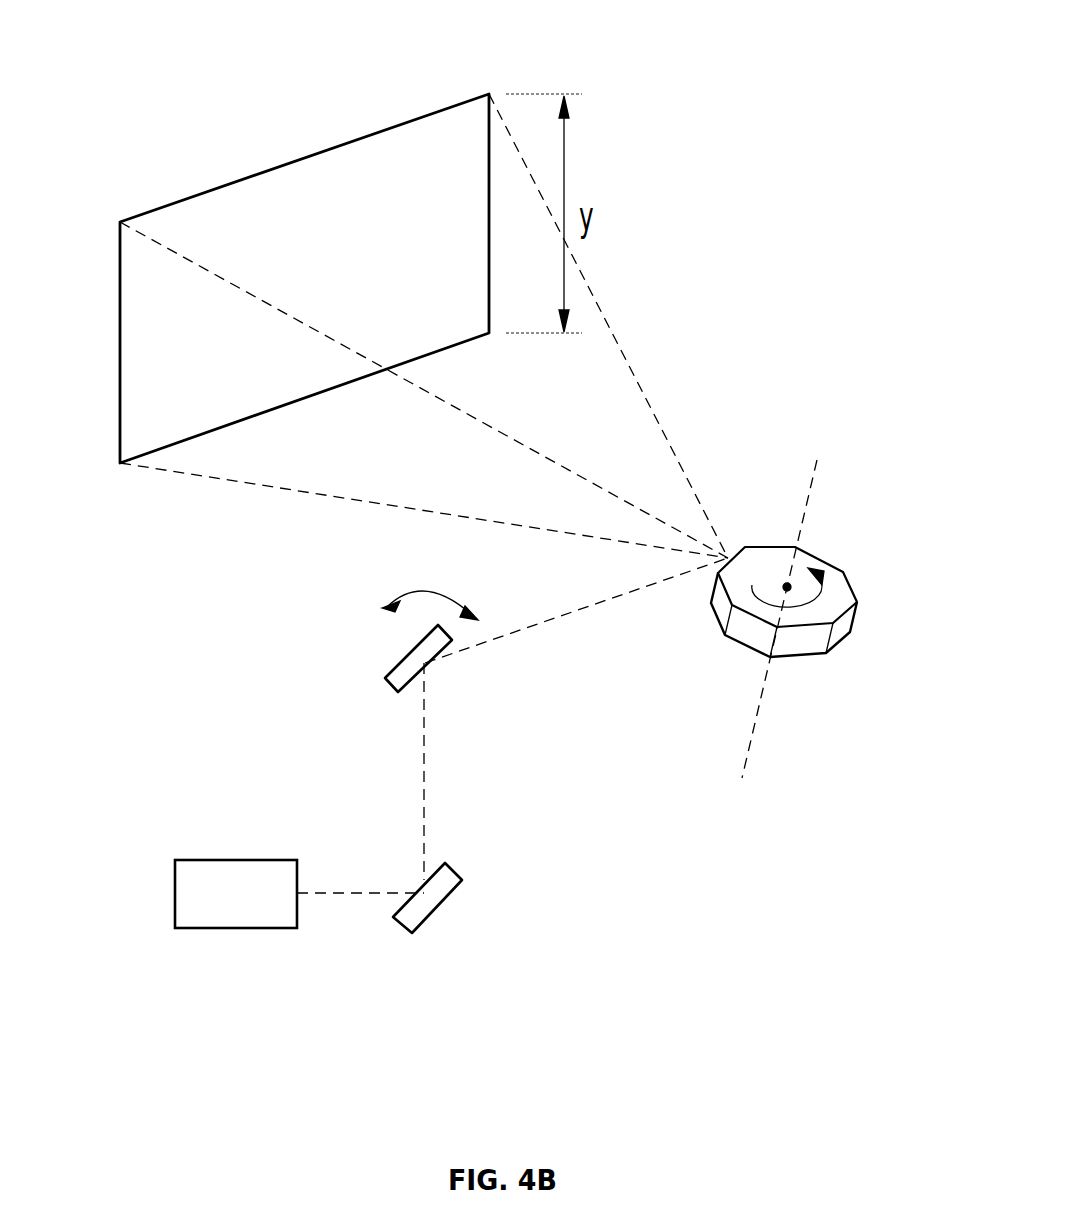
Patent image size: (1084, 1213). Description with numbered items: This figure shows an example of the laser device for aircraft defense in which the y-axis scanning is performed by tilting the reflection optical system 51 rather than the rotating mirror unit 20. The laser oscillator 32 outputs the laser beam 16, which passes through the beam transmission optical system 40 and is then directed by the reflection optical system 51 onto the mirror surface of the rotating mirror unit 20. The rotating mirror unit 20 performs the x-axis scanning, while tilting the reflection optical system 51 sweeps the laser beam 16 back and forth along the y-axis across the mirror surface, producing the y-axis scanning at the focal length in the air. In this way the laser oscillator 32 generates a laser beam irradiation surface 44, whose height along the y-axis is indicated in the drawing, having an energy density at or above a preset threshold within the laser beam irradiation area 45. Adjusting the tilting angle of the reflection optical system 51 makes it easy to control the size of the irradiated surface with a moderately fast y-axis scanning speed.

The laser beam 16 is at (597, 605).
The rotating mirror unit 20 is at (835, 588).
The laser oscillator 32 is at (175, 893).
The beam transmission optical system 40 is at (438, 908).
The laser beam irradiation surface 44 is at (305, 155).
The laser beam irradiation area 45 is at (179, 520).
The reflection optical system 51 is at (395, 658).